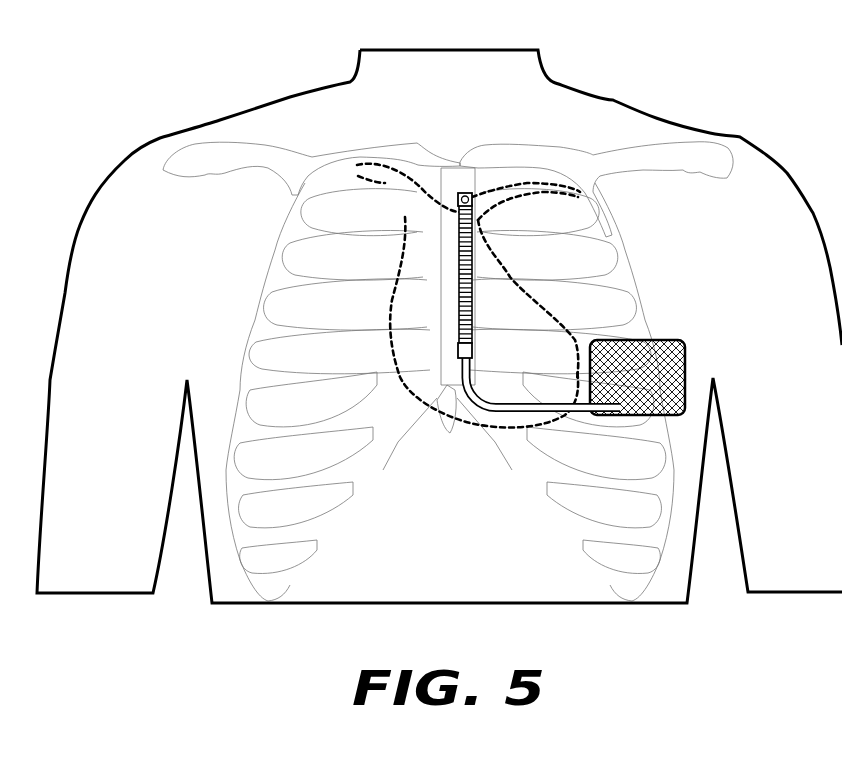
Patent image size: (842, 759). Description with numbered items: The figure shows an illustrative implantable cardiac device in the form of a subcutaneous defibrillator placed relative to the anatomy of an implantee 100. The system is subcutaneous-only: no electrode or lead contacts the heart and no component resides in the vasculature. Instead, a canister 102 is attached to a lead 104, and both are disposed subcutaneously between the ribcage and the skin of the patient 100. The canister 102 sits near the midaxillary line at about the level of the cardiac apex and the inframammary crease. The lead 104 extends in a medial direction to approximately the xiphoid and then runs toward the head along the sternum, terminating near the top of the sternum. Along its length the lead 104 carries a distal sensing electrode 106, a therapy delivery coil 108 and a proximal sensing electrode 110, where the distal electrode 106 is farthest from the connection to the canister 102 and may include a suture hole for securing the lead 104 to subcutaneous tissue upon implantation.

The implantee 100 is at (572, 97).
The canister 102 is at (677, 340).
The lead 104 is at (538, 410).
The distal sensing electrode 106 is at (458, 197).
The therapy delivery coil 108 is at (459, 272).
The proximal sensing electrode 110 is at (459, 350).